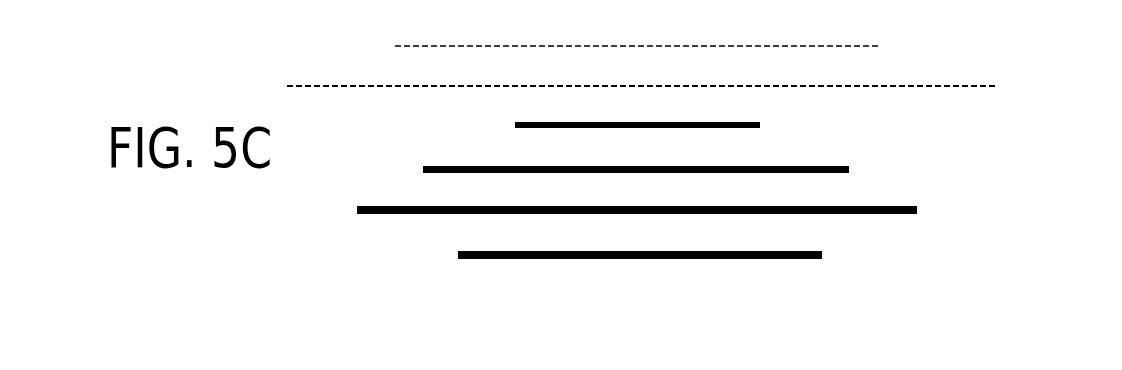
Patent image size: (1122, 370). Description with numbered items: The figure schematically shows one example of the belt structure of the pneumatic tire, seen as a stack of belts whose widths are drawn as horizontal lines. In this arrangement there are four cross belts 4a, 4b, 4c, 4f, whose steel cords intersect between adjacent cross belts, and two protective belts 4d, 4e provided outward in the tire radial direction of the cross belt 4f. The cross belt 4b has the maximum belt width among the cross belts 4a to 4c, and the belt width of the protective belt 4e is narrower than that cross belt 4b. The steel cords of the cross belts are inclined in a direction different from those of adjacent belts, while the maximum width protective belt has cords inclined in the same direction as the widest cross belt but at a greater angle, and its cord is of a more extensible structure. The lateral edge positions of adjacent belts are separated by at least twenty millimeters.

The cross belt 4a is at (822, 255).
The cross belt 4b is at (917, 210).
The cross belt 4c is at (849, 169).
The protective belt 4d is at (995, 86).
The protective belt 4e is at (878, 46).
The cross belt 4f is at (760, 125).